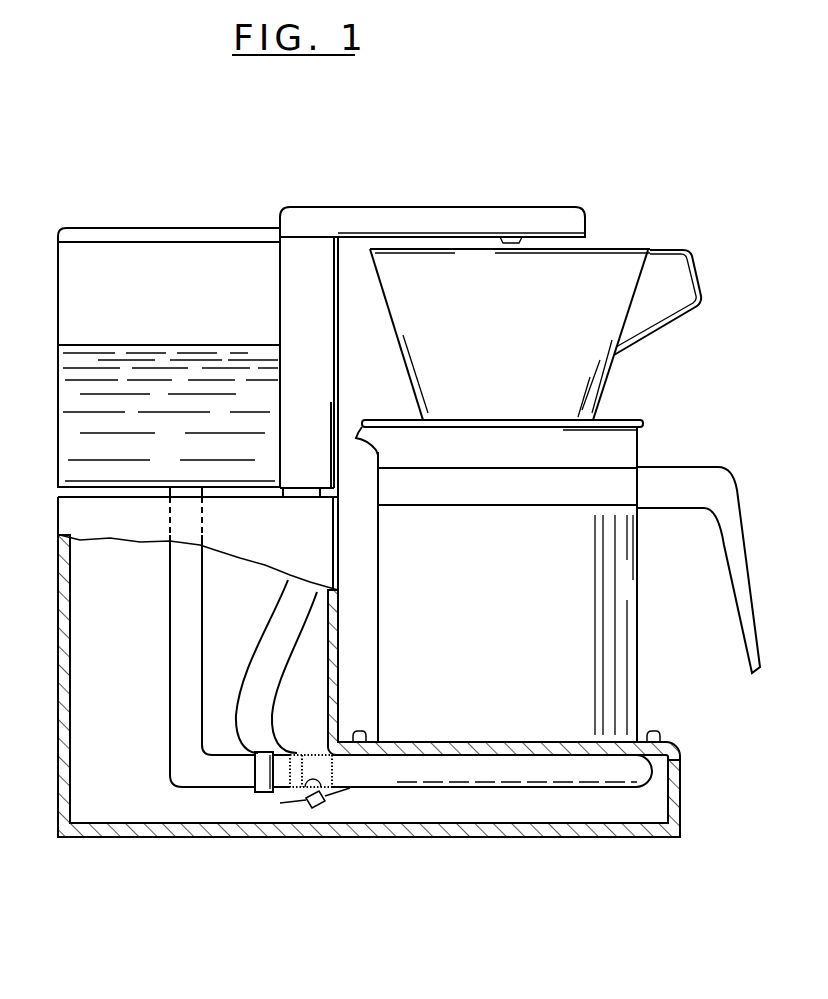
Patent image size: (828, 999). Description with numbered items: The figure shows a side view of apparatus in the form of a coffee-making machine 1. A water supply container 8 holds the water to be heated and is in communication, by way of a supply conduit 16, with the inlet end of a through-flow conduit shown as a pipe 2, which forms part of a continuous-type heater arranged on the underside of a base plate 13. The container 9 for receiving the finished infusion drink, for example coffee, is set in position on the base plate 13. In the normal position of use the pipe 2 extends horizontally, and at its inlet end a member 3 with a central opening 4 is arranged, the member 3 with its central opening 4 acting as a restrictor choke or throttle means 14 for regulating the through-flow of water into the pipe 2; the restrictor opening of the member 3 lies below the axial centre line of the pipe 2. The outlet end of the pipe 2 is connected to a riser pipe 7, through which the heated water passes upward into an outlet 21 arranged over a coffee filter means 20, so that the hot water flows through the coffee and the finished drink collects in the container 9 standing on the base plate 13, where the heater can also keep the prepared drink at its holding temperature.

The coffee machine 1 is at (410, 186).
The pipe 2 is at (588, 775).
The member 3 is at (298, 760).
The central opening 4 is at (318, 795).
The riser pipe 7 is at (267, 670).
The water supply container 8 is at (80, 290).
The container 9 is at (622, 582).
The base plate 13 is at (632, 748).
The restrictor choke or throttle means 14 is at (303, 740).
The supply conduit 16 is at (185, 722).
The coffee filter means 20 is at (628, 268).
The outlet 21 is at (522, 225).